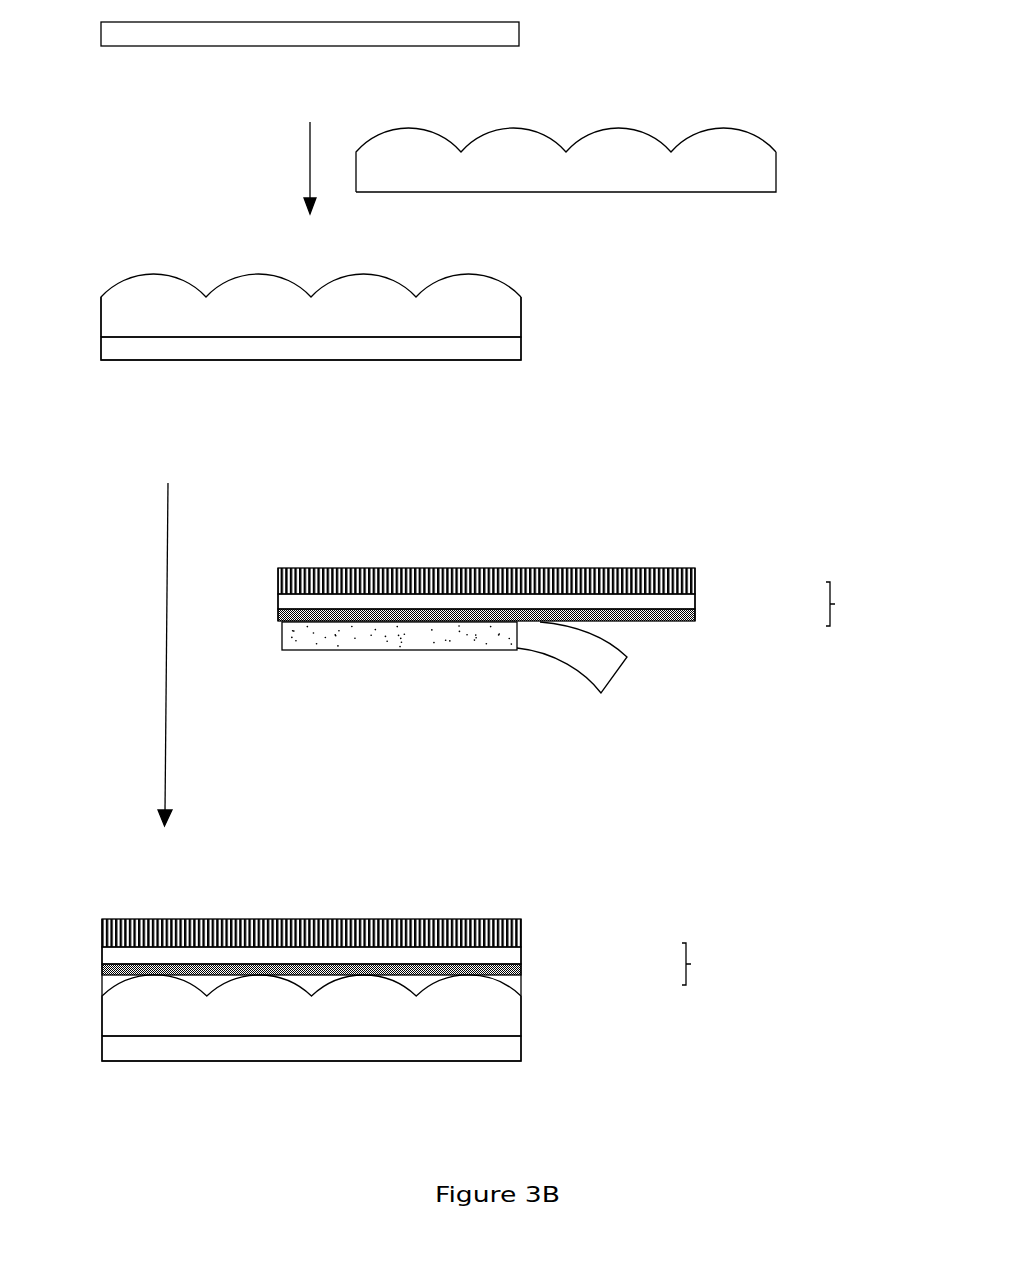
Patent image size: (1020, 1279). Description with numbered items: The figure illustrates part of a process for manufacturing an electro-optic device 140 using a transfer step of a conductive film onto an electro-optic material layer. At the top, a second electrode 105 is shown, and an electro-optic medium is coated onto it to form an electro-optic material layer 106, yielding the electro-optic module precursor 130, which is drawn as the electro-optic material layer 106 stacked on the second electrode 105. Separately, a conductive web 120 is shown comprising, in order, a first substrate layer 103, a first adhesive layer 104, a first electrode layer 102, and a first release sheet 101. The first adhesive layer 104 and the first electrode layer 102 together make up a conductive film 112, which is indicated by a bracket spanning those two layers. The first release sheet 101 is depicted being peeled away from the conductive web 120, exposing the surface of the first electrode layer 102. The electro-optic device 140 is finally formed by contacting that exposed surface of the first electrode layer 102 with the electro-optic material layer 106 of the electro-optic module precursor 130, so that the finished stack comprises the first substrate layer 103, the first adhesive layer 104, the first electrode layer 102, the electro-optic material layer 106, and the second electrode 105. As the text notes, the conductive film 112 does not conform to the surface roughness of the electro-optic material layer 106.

The first release sheet 101 is at (605, 666).
The first electrode layer 102 is at (696, 617).
The first substrate layer 103 is at (696, 573).
The first adhesive layer 104 is at (688, 603).
The second electrode 105 is at (521, 30).
The electro-optic material layer 106 is at (736, 165).
The conductive film 112 is at (790, 783).
The conductive web 120 is at (456, 594).
The electro-optic module precursor 130 is at (275, 328).
The electro-optic device 140 is at (276, 990).